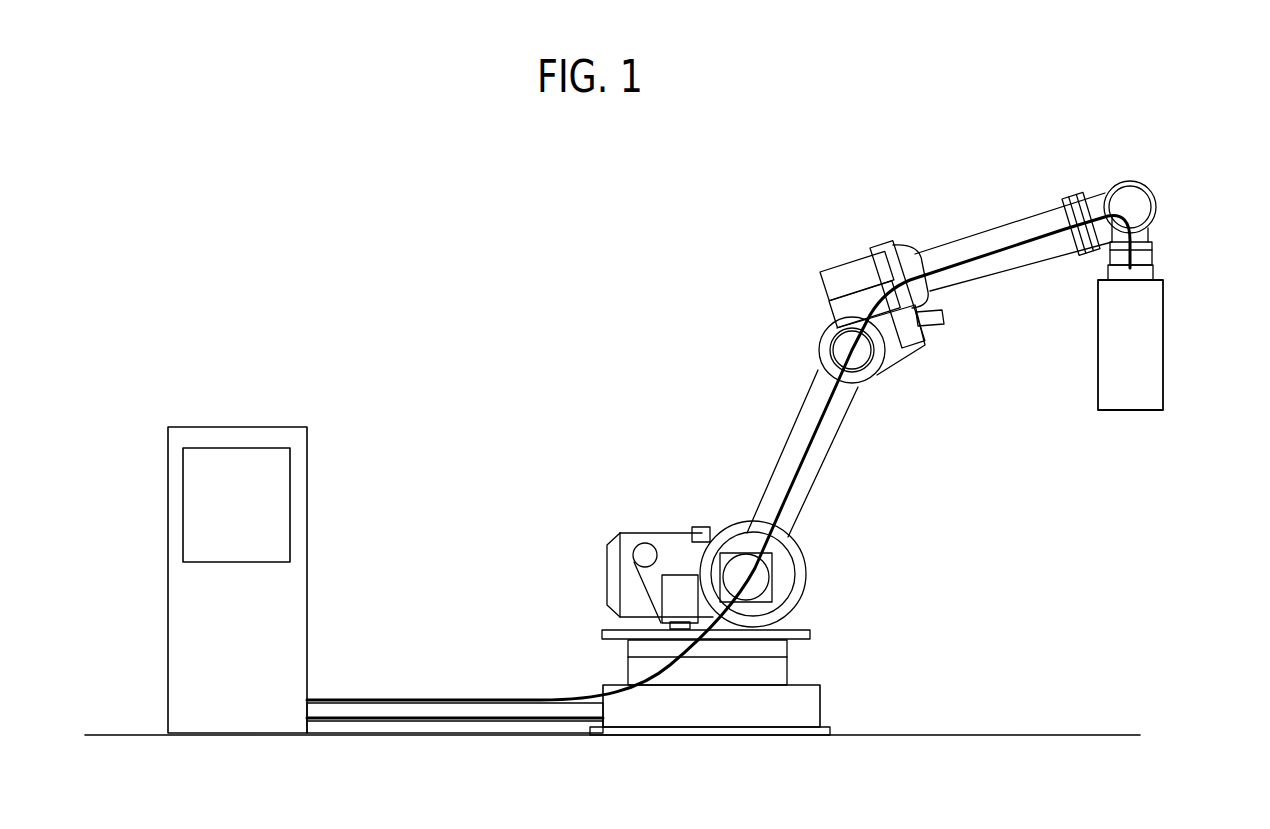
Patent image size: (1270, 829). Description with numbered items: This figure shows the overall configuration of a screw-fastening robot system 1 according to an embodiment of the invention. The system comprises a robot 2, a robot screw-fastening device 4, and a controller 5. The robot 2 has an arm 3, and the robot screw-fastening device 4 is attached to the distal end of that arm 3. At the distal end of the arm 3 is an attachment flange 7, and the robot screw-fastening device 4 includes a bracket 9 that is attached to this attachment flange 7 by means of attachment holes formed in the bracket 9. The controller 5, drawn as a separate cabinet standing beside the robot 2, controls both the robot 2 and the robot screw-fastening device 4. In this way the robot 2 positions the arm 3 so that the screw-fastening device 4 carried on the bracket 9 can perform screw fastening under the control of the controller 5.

The screw-fastening robot system 1 is at (510, 298).
The robot 2 is at (776, 432).
The arm 3 is at (998, 228).
The robot screw-fastening device 4 is at (1196, 278).
The controller 5 is at (236, 413).
The attachment flange 7 is at (1153, 257).
The bracket 9 is at (1108, 271).